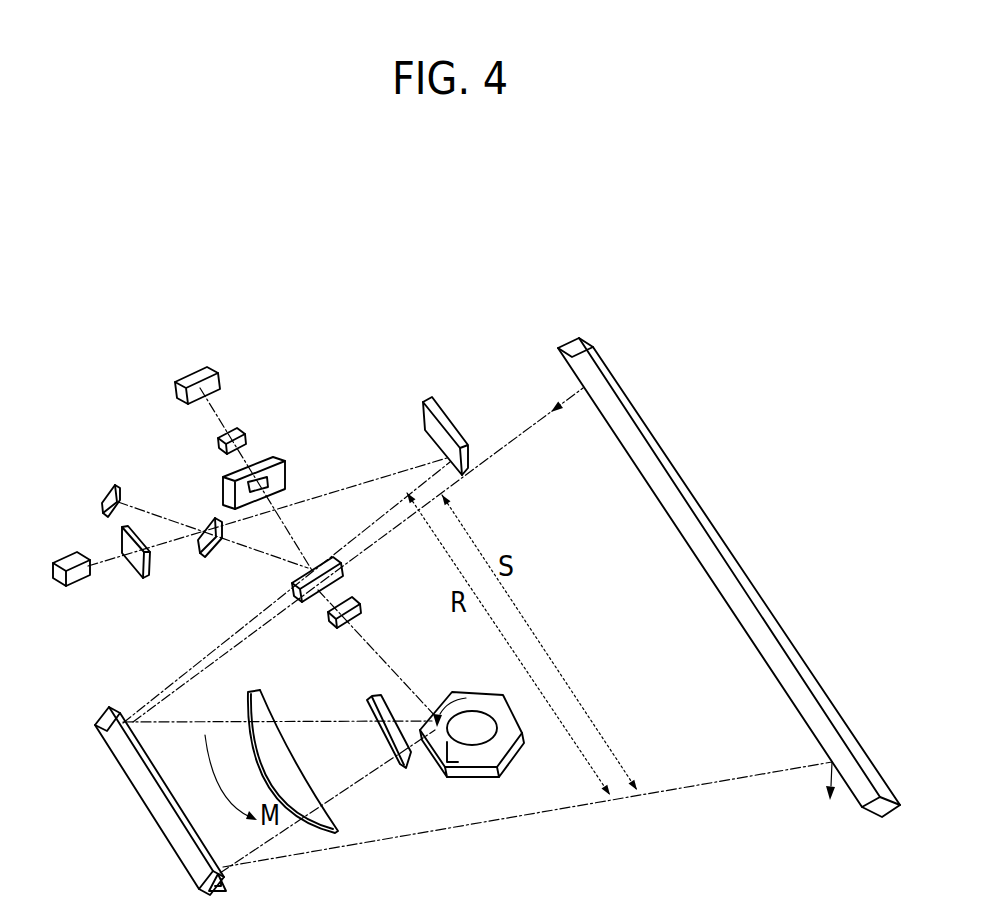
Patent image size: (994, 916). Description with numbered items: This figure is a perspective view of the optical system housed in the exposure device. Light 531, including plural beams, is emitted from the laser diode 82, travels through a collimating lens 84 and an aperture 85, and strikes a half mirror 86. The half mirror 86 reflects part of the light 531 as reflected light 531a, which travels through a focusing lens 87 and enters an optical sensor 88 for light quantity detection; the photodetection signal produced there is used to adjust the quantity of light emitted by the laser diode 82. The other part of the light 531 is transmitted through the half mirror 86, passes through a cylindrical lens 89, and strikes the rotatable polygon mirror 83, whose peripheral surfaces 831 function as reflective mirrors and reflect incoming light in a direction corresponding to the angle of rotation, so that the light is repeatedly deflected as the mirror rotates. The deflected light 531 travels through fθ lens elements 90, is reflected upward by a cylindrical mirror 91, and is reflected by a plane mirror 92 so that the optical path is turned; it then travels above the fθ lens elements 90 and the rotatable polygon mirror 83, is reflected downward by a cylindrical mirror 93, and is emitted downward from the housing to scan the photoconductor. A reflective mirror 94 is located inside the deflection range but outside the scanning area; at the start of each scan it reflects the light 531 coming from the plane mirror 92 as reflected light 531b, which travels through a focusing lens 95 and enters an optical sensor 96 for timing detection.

The laser diode 82 is at (203, 367).
The light 531 is at (213, 400).
The collimating lens 84 is at (231, 432).
The aperture 85 is at (270, 456).
The reflected light 531a is at (256, 552).
The reflected light 531b is at (352, 484).
The optical sensor 88 is at (110, 487).
The focusing lens 87 is at (205, 527).
The optical sensor 96 is at (75, 557).
The focusing lens 95 is at (147, 567).
The half mirror 86 is at (316, 562).
The cylindrical lens 89 is at (353, 598).
The reflective mirror 94 is at (436, 400).
The cylindrical mirror 93 is at (574, 349).
The plane mirror 92 is at (170, 822).
The cylindrical mirror 91 is at (231, 880).
The fθ lens elements 90 is at (357, 692).
The rotatable polygon mirror 83 is at (480, 700).
The peripheral surfaces 831 is at (480, 772).